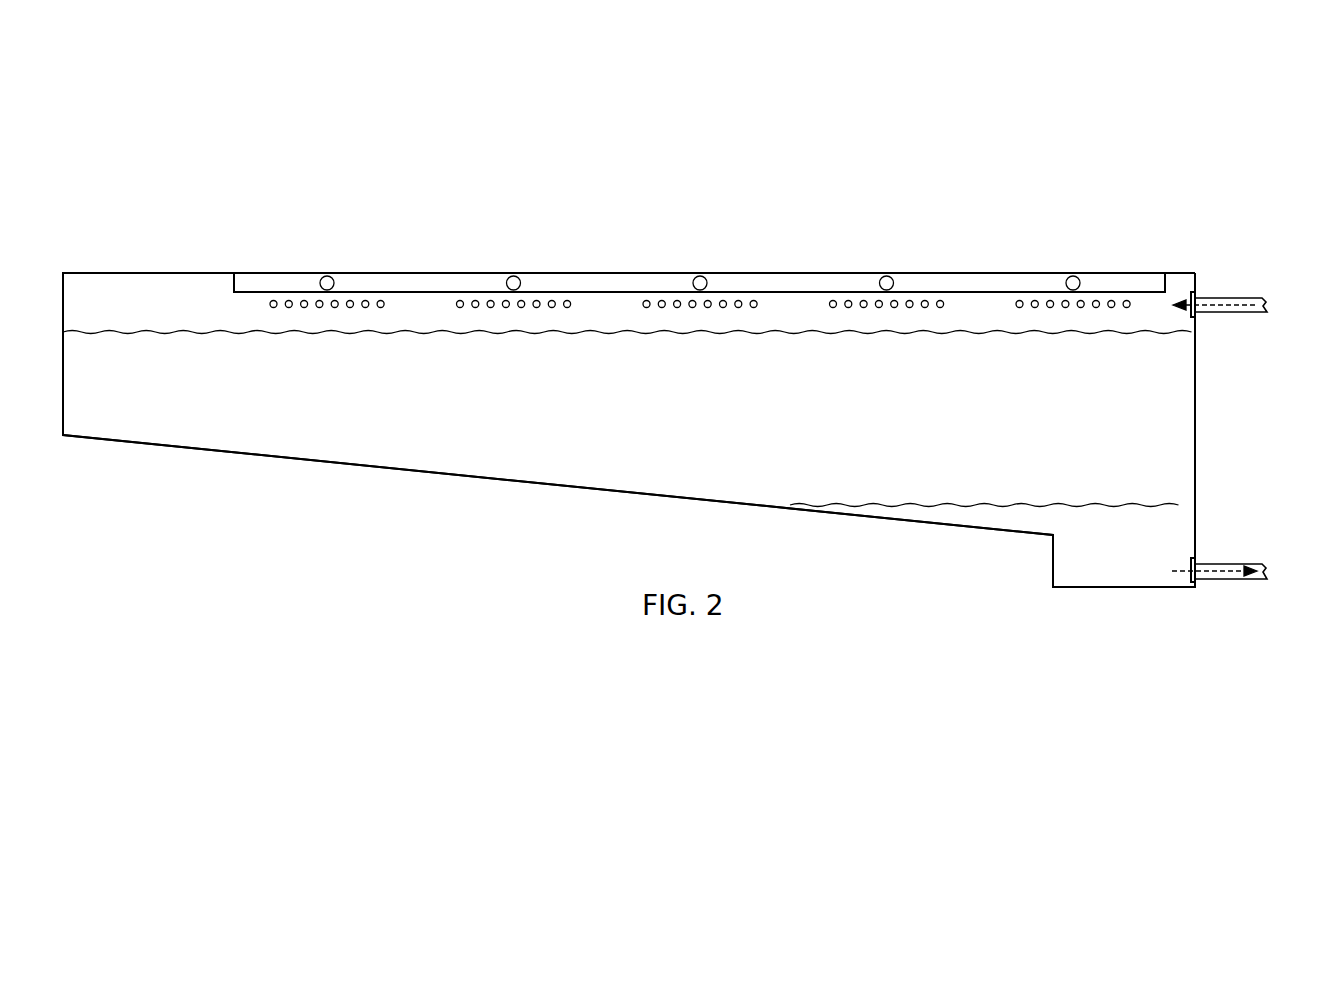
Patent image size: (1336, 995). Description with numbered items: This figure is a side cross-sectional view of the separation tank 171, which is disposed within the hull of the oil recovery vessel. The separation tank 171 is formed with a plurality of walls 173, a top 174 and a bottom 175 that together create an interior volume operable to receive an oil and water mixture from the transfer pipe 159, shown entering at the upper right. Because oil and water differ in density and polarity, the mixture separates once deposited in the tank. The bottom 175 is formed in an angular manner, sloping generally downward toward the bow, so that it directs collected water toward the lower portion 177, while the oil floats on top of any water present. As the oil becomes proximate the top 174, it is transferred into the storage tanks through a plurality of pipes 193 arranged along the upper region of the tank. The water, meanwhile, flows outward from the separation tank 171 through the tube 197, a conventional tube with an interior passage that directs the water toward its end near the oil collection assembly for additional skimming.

The separation tank 171 is at (1105, 135).
The walls 173 is at (63, 435).
The top 174 is at (185, 273).
The bottom 175 is at (394, 472).
The lower portion 177 is at (1122, 572).
The pipes 193 is at (382, 304).
The transfer pipe 159 is at (1233, 305).
The tube 197 is at (1215, 580).